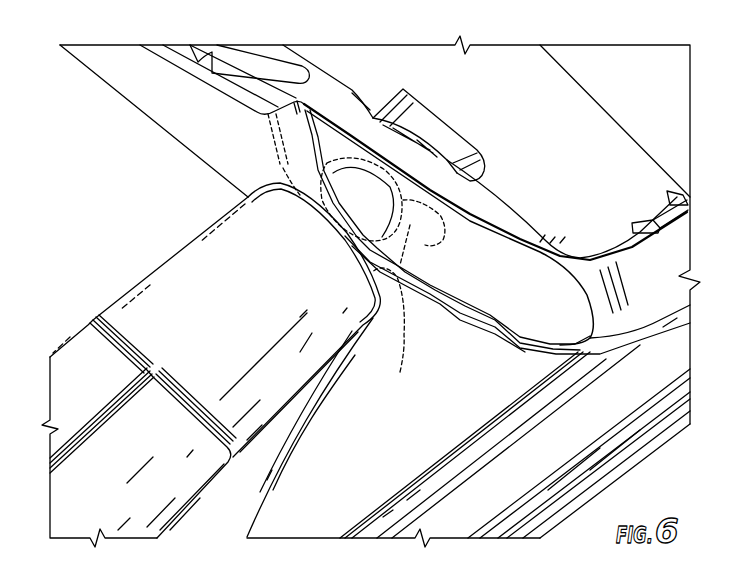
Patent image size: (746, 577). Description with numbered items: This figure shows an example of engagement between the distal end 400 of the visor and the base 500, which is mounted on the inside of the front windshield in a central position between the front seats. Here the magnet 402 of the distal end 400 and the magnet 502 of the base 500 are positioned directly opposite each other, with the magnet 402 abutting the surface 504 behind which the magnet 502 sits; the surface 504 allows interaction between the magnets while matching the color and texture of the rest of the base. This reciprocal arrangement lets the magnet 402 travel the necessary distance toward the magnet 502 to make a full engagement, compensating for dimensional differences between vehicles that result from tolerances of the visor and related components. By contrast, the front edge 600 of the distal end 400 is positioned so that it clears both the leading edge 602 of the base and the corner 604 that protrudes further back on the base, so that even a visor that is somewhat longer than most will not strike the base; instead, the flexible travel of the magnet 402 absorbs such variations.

The distal end 400 is at (124, 244).
The magnet 402 is at (394, 313).
The base 500 is at (131, 103).
The magnet 502 is at (425, 207).
The surface 504 is at (557, 300).
The front edge 600 is at (317, 167).
The leading edge 602 is at (625, 372).
The corner 604 is at (270, 144).